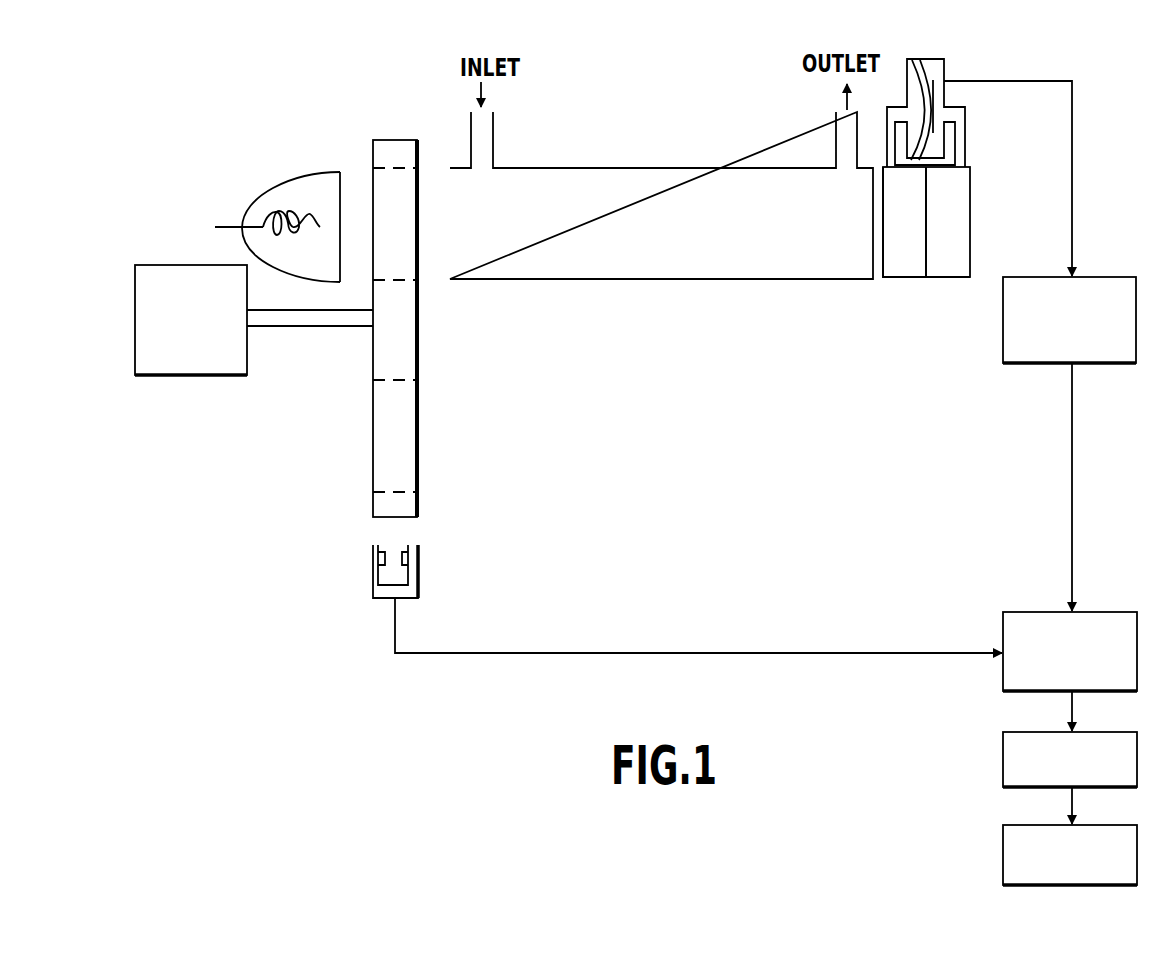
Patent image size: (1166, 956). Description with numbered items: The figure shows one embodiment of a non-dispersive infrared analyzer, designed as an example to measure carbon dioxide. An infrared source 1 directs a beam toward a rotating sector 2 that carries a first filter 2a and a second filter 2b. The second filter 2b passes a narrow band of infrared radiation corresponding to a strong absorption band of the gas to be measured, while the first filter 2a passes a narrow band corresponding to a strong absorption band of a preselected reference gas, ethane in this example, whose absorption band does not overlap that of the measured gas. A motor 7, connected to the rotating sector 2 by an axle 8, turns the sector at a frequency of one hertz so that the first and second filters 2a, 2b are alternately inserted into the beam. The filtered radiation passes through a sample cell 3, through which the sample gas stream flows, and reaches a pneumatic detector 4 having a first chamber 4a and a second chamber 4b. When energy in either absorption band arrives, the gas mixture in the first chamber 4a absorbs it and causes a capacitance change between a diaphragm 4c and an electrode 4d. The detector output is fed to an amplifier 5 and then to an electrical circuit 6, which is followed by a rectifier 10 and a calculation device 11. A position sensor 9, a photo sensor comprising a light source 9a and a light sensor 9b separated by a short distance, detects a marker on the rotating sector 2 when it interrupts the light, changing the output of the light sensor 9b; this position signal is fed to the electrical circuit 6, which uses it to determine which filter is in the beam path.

The infrared source 1 is at (276, 197).
The rotating sector 2 is at (399, 152).
The first filter 2a is at (404, 255).
The second filter 2b is at (402, 432).
The sample cell 3 is at (677, 167).
The pneumatic detector 4 is at (961, 171).
The first chamber 4a is at (895, 255).
The second chamber 4b is at (940, 253).
The diaphragm 4c is at (913, 72).
The electrode 4d is at (936, 97).
The amplifier 5 is at (1003, 347).
The electrical circuit 6 is at (1003, 630).
The motor 7 is at (135, 341).
The axle 8 is at (287, 320).
The position sensor 9 is at (386, 579).
The light source 9a is at (384, 550).
The light sensor 9b is at (403, 550).
The rectifier 10 is at (1003, 762).
The calculation device 11 is at (1003, 855).